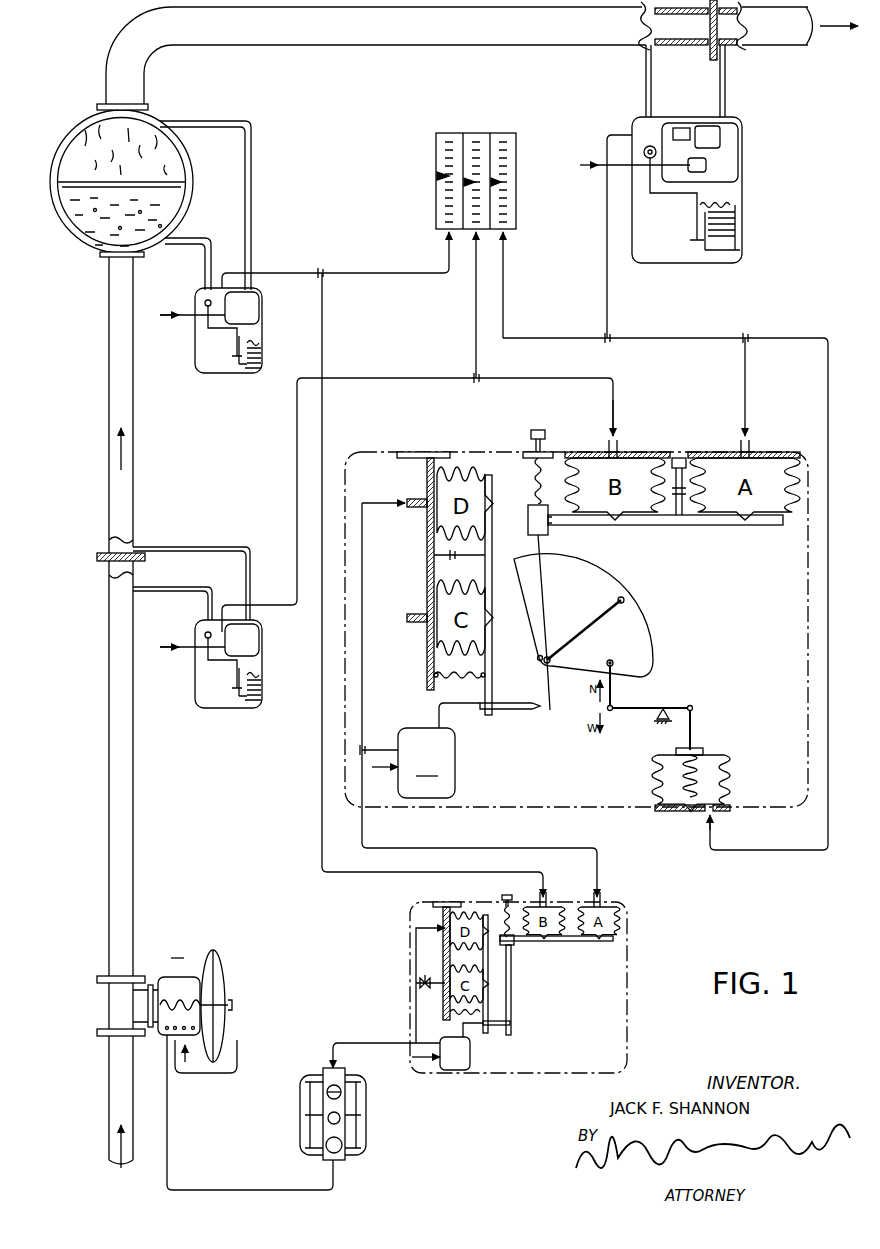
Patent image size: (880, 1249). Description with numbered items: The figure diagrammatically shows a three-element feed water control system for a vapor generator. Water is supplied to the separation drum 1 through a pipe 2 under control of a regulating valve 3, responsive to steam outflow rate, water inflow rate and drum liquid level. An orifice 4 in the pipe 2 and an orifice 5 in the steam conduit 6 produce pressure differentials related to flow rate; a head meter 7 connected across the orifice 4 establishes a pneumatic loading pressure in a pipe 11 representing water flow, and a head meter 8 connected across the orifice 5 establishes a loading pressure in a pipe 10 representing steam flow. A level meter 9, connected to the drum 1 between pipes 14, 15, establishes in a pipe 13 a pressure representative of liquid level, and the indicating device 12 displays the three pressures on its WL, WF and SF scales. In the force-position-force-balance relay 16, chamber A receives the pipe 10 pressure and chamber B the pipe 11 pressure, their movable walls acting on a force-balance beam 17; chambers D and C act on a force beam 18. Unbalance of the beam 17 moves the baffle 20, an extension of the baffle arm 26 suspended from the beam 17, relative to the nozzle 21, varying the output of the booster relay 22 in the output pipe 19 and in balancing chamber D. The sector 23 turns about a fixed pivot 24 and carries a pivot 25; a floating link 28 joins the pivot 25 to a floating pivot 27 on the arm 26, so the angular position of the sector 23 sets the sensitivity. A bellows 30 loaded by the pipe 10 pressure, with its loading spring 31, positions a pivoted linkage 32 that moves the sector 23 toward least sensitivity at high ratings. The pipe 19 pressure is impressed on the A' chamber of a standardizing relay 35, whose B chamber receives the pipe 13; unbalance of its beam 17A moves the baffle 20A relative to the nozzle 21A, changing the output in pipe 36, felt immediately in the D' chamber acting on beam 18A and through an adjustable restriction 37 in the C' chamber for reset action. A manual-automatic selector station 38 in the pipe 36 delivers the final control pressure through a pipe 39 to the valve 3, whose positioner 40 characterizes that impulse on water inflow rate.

The separation drum 1 is at (92, 250).
The pipe 2 is at (134, 825).
The regulating valve 3 is at (167, 1007).
The orifice 4 is at (120, 562).
The orifice 5 is at (707, 27).
The conduit 6 is at (350, 47).
The meter 7 is at (228, 708).
The meter 8 is at (706, 263).
The meter 9 is at (237, 373).
The pipe 10 is at (605, 262).
The pipe 11 is at (297, 470).
The indicating device 12 is at (516, 205).
The pipe 13 is at (322, 333).
The pipe 14 is at (197, 238).
The pipe 15 is at (218, 121).
The force-position-force-balance relay 16 is at (365, 452).
The force-balance beam 17 is at (712, 527).
The beam 17A is at (555, 942).
The force beam 18 is at (493, 508).
The force beam 18A is at (492, 925).
The output pipe 19 is at (548, 850).
The baffle 20 is at (552, 708).
The baffle 20A is at (513, 1016).
The nozzle 21 is at (532, 712).
The nozzle 21A is at (497, 1030).
The booster relay 22 is at (413, 763).
The sector 23 is at (620, 586).
The fixed pivot 24 is at (538, 664).
The pivot 25 is at (617, 600).
The baffle arm 26 is at (543, 583).
The floating pivot 27 is at (550, 655).
The floating link 28 is at (592, 628).
The bellows 30 is at (726, 759).
The loading spring 31 is at (680, 775).
The pivoted linkage 32 is at (650, 707).
The standardizing relay 35 is at (627, 1048).
The output pipe 36 is at (372, 1040).
The adjustable restriction 37 is at (420, 985).
The manual-automatic selector station 38 is at (367, 1138).
The pipe 39 is at (170, 1133).
The positioner 40 is at (165, 1036).